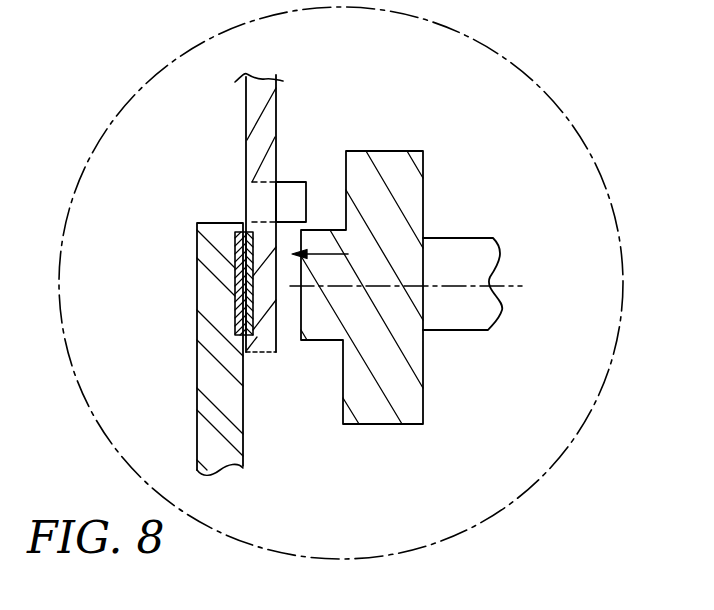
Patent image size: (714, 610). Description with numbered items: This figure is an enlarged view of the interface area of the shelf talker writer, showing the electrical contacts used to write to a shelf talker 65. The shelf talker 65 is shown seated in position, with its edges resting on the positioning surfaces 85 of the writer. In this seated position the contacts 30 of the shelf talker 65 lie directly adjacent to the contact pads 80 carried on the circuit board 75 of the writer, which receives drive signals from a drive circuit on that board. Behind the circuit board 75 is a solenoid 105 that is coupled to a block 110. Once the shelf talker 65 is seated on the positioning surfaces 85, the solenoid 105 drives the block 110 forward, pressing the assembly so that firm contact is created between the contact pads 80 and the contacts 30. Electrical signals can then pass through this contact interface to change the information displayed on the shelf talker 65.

The contacts 30 is at (255, 318).
The shelf talker 65 is at (276, 100).
The circuit board 75 is at (197, 384).
The contact pads 80 is at (237, 298).
The positioning surfaces 85 is at (293, 182).
The solenoid 105 is at (463, 238).
The block 110 is at (397, 151).